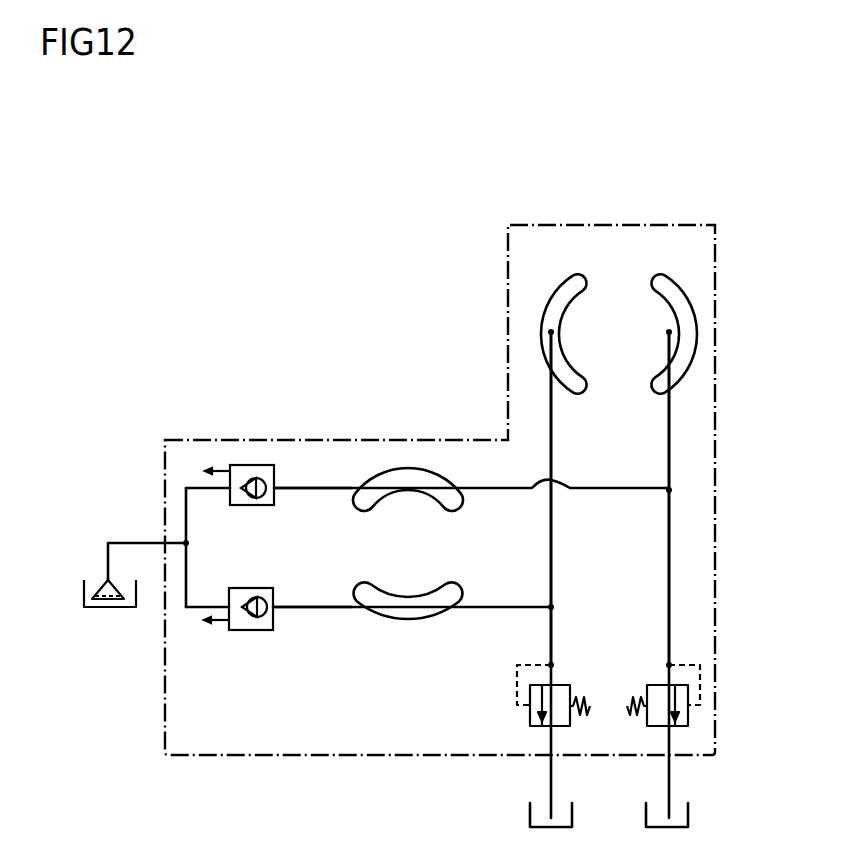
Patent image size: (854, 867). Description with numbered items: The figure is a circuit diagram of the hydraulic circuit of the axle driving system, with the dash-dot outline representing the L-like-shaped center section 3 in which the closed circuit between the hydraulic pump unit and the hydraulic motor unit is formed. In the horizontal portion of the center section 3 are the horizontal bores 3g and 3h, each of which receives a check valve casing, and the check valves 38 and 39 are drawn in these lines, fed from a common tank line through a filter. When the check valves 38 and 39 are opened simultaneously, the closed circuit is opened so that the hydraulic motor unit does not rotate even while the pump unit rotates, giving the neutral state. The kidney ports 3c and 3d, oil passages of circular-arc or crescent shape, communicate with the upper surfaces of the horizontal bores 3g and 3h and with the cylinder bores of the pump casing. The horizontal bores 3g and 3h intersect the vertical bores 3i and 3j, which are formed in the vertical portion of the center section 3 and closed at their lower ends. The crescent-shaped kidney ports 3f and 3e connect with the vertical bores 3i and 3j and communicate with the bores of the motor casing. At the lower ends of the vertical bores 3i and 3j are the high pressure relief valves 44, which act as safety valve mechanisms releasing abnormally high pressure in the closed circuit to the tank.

The center section 3 is at (376, 757).
The check valve 38 is at (262, 464).
The check valve 39 is at (260, 628).
The kidney port 3c is at (437, 482).
The kidney port 3d is at (430, 590).
The kidney port 3e is at (568, 288).
The kidney port 3f is at (655, 288).
The horizontal bore 3g is at (322, 486).
The horizontal bore 3h is at (336, 572).
The vertical bore 3i is at (670, 503).
The vertical bore 3j is at (551, 548).
The high pressure relief valve 44 is at (647, 683).